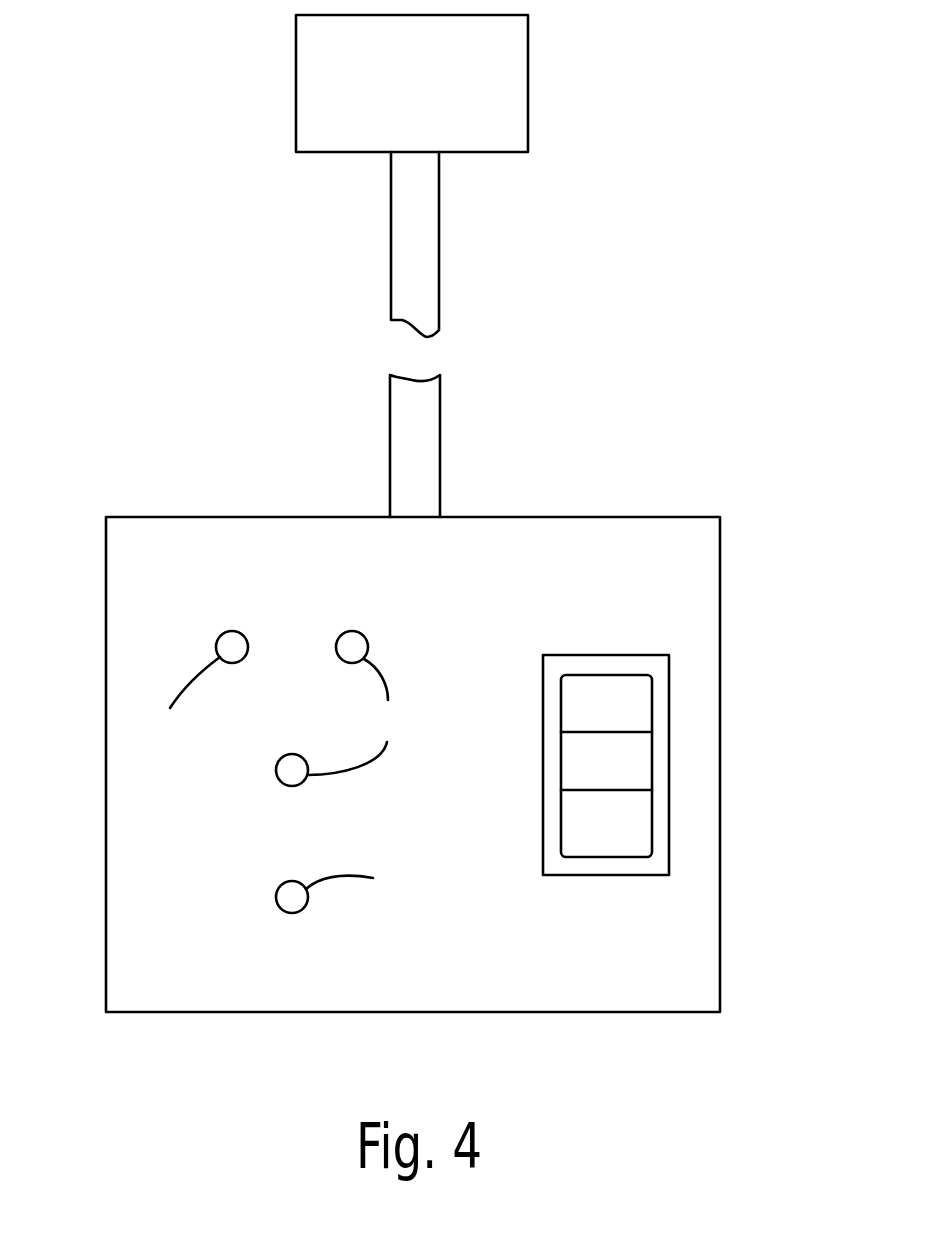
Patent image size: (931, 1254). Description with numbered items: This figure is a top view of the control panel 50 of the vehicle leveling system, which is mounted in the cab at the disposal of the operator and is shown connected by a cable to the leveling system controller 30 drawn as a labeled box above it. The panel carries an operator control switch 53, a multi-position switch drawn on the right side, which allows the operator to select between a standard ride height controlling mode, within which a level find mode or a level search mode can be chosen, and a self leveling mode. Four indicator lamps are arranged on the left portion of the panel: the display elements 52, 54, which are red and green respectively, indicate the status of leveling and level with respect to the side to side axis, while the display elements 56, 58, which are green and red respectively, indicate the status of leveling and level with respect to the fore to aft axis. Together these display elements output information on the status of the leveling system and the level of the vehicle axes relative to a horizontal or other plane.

The leveling system controller 30 is at (515, 153).
The control panel 50 is at (648, 517).
The display element 52 is at (220, 636).
The operator control switch 53 is at (629, 823).
The display element 54 is at (362, 631).
The display element 56 is at (281, 783).
The display element 58 is at (277, 898).